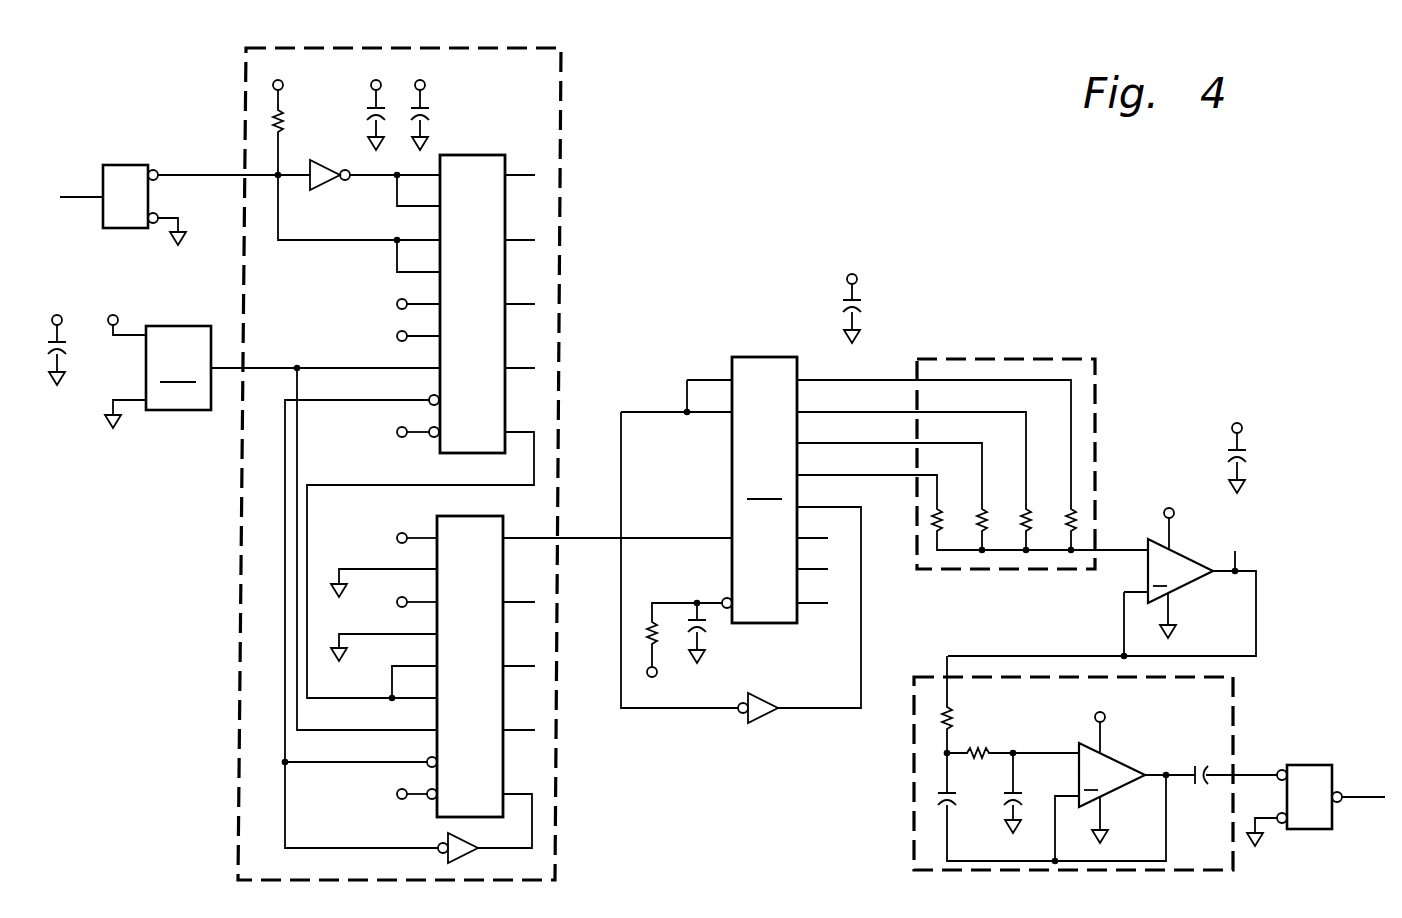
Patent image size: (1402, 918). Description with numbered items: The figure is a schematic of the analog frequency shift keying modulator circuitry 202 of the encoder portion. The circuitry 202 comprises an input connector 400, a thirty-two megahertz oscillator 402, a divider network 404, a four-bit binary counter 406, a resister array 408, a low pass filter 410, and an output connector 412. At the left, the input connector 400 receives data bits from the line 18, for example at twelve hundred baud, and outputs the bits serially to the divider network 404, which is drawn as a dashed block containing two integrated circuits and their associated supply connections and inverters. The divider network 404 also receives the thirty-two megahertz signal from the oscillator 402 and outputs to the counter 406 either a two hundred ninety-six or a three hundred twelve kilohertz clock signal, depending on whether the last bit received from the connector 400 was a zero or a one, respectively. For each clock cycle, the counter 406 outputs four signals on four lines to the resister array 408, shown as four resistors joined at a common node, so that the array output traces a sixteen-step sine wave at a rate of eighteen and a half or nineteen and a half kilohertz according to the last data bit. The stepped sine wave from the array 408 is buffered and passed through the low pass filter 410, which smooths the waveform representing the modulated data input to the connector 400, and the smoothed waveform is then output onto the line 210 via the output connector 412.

The line 18 is at (79, 195).
The FSK modulator circuitry 202 is at (880, 163).
The line 210 is at (1366, 795).
The input connector 400 is at (126, 165).
The 32 MHz oscillator 402 is at (239, 359).
The divider network 404 is at (556, 775).
The four-bit binary counter 406 is at (745, 487).
The resister array 408 is at (1003, 357).
The low pass filter 410 is at (914, 790).
The output connector 412 is at (1311, 763).